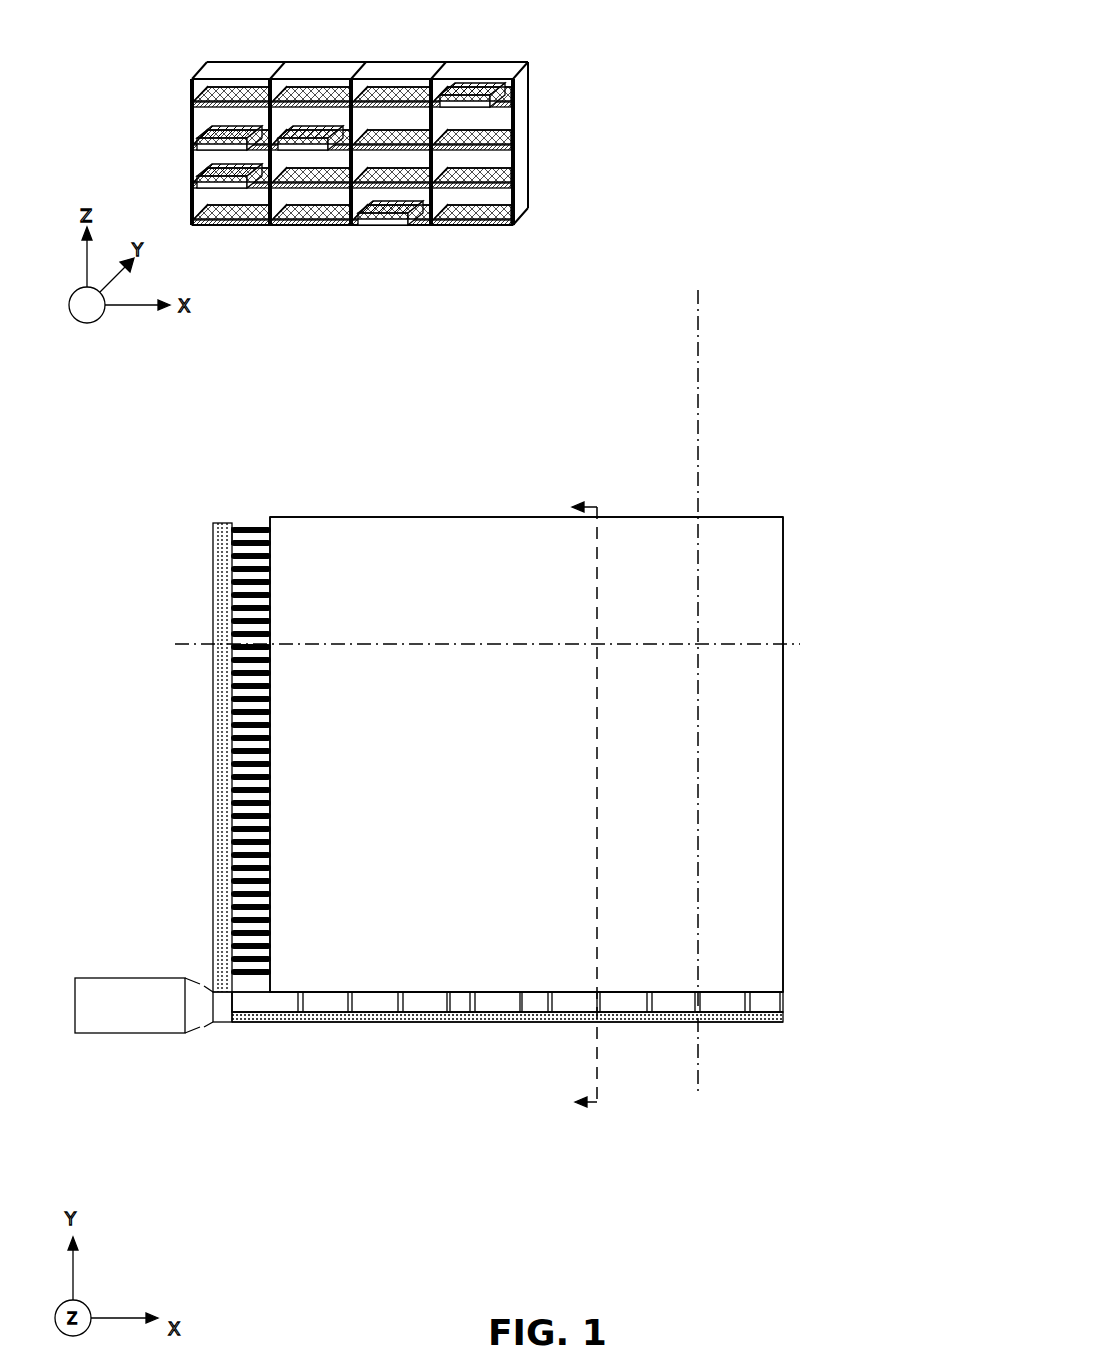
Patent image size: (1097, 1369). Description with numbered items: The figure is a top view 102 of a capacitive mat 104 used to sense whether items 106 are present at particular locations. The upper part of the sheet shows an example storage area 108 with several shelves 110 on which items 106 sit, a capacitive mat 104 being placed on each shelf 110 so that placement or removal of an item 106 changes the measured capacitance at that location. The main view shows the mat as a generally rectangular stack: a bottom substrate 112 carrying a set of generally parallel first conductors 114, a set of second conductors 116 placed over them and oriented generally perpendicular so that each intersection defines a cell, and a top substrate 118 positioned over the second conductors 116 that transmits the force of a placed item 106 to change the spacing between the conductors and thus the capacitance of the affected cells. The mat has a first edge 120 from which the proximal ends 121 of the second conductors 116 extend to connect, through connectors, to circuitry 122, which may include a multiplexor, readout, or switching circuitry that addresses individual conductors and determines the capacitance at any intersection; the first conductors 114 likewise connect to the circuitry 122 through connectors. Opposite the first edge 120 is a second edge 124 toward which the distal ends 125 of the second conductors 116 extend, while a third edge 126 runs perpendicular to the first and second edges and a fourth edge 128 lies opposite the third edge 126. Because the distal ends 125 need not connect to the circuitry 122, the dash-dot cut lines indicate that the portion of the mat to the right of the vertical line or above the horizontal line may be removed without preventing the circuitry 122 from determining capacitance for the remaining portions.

The top view 102 is at (497, 740).
The capacitive mat 104 is at (470, 440).
The item 106 is at (213, 176).
The storage area 108 is at (290, 129).
The shelf 110 is at (212, 114).
The bottom substrate 112 is at (380, 1002).
The first conductors 114 is at (793, 1012).
The second conductors 116 is at (270, 500).
The top substrate 118 is at (745, 628).
The first edge 120 is at (270, 975).
The proximal ends 121 is at (236, 527).
The circuitry 122 is at (144, 1005).
The second edge 124 is at (784, 897).
The distal ends 125 is at (760, 498).
The third edge 126 is at (498, 517).
The fourth edge 128 is at (632, 1018).